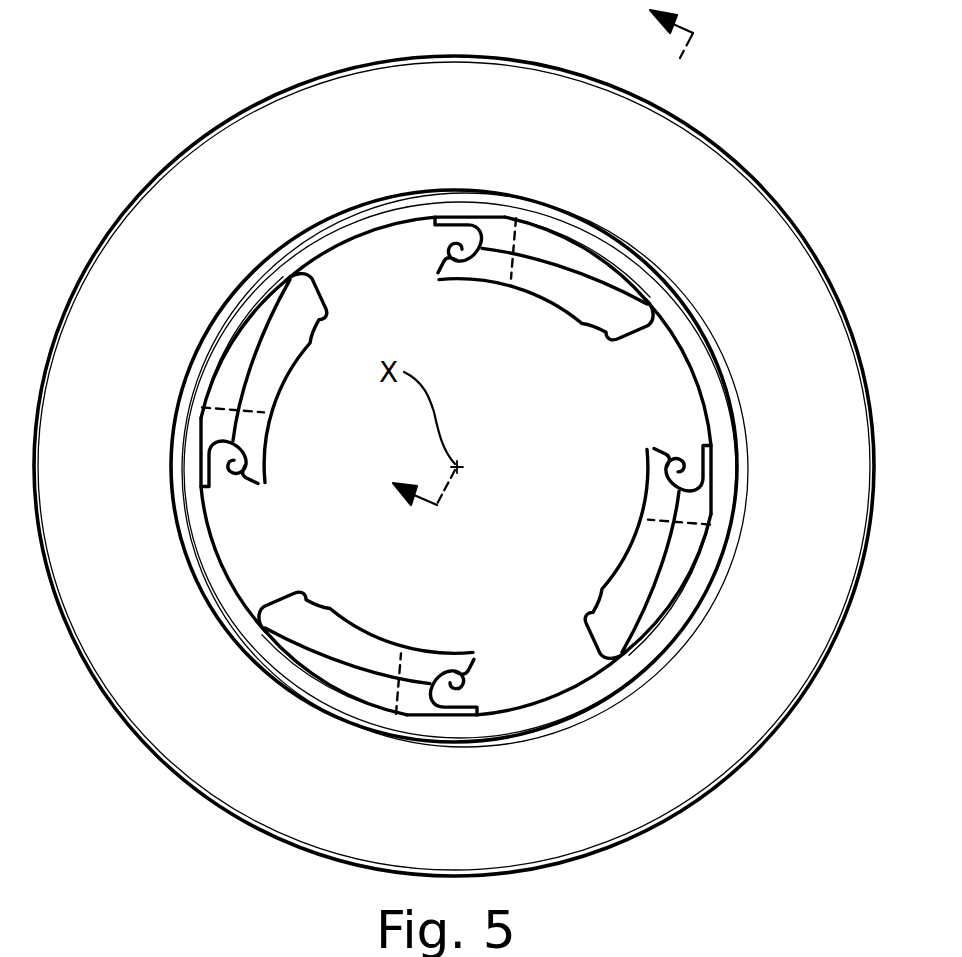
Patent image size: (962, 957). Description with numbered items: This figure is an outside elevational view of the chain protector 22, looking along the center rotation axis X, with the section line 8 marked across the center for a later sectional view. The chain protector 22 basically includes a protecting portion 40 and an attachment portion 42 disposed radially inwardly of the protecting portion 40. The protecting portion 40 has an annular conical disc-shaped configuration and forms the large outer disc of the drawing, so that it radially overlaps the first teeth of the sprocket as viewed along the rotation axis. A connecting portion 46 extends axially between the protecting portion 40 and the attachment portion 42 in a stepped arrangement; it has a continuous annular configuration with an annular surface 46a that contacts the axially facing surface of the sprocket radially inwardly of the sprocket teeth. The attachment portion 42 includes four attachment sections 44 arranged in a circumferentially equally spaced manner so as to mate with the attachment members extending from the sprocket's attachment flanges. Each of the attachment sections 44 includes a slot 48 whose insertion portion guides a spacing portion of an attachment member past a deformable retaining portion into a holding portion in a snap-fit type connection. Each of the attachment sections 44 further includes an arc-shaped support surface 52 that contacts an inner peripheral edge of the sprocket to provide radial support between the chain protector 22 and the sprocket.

The chain protector 22 is at (757, 147).
The protecting portion 40 is at (738, 230).
The attachment portion 42 is at (298, 586).
The attachment sections 44 is at (582, 260).
The connecting portion 46 is at (725, 348).
The annular surface 46a is at (715, 403).
The slot 48 is at (447, 248).
The arc-shaped support surface 52 is at (627, 276).
The section line 8- 8 is at (532, 252).